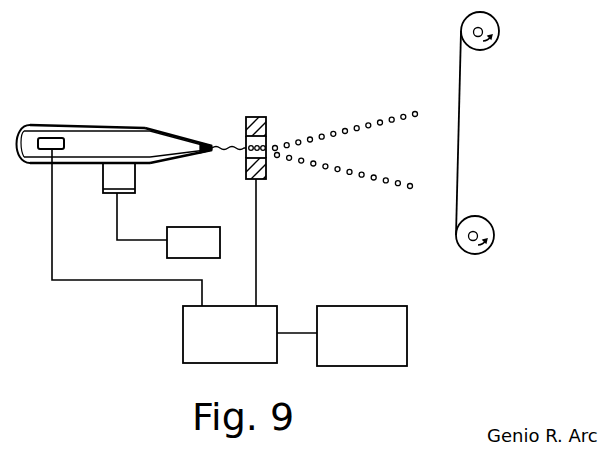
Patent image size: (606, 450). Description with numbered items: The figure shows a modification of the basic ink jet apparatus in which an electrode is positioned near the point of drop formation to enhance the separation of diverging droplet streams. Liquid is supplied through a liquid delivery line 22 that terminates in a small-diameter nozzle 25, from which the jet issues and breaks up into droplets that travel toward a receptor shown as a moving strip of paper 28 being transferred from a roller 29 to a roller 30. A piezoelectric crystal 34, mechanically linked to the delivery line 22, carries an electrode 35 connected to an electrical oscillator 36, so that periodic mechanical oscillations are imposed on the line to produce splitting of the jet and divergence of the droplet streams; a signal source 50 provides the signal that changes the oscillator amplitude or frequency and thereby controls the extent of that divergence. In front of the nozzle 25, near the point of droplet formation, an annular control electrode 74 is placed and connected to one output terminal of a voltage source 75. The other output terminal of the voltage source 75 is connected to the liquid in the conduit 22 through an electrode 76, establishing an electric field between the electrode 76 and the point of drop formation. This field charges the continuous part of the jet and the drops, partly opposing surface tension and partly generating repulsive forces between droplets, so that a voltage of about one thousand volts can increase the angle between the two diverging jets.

The liquid delivery line 22 is at (82, 135).
The nozzle 25 is at (180, 143).
The electrode 76 is at (55, 138).
The piezoelectric crystal 34 is at (128, 178).
The electrode 35 is at (112, 190).
The electrical oscillator 36 is at (183, 251).
The annular control electrode 74 is at (268, 117).
The voltage source 75 is at (270, 306).
The signal source 50 is at (396, 306).
The roller 29 is at (487, 22).
The roller 30 is at (485, 224).
The moving strip of paper 28 is at (460, 151).